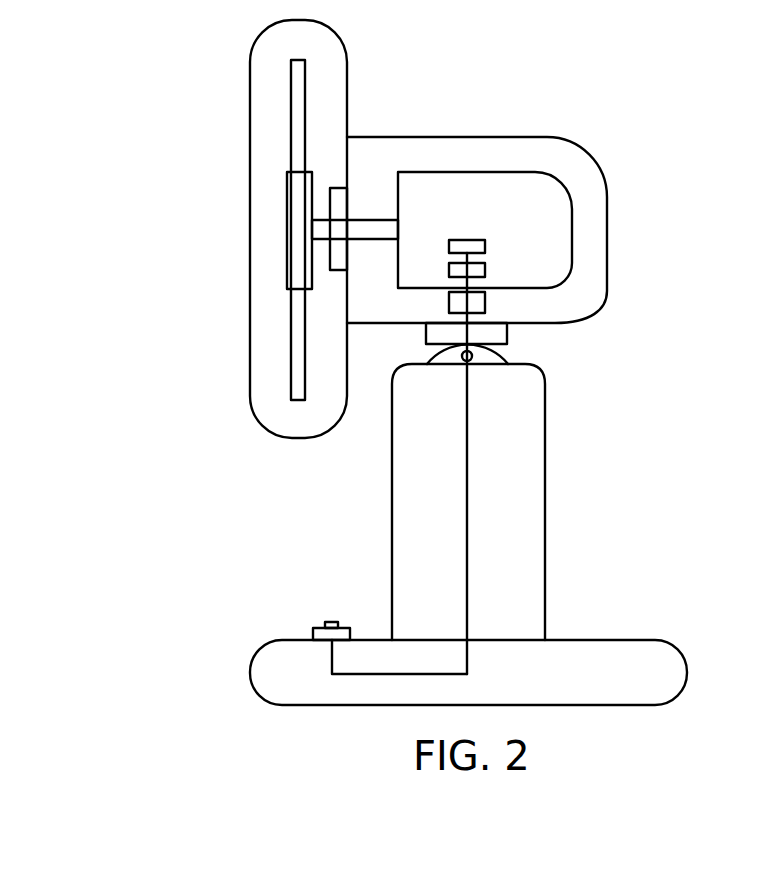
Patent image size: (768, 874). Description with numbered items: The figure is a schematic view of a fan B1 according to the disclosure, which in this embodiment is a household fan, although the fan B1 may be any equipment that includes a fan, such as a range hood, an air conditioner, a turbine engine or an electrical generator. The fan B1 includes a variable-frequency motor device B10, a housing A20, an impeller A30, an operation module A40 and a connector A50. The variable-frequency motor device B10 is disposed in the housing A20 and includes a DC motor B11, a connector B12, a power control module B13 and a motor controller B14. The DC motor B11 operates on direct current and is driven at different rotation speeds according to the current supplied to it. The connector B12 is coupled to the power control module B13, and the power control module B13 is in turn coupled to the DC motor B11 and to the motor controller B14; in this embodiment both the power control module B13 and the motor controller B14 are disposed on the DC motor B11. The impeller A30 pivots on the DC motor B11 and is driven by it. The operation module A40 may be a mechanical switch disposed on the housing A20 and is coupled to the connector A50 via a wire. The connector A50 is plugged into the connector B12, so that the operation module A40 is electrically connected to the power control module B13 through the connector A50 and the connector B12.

The fan B1 is at (724, 43).
The impeller A30 is at (278, 144).
The variable-frequency motor device B10 is at (583, 181).
The DC motor B11 is at (555, 207).
The motor controller B14 is at (472, 249).
The power control module B13 is at (472, 268).
The connector B12 is at (473, 295).
The connector A50 is at (473, 306).
The housing A20 is at (562, 521).
The operation module A40 is at (324, 611).